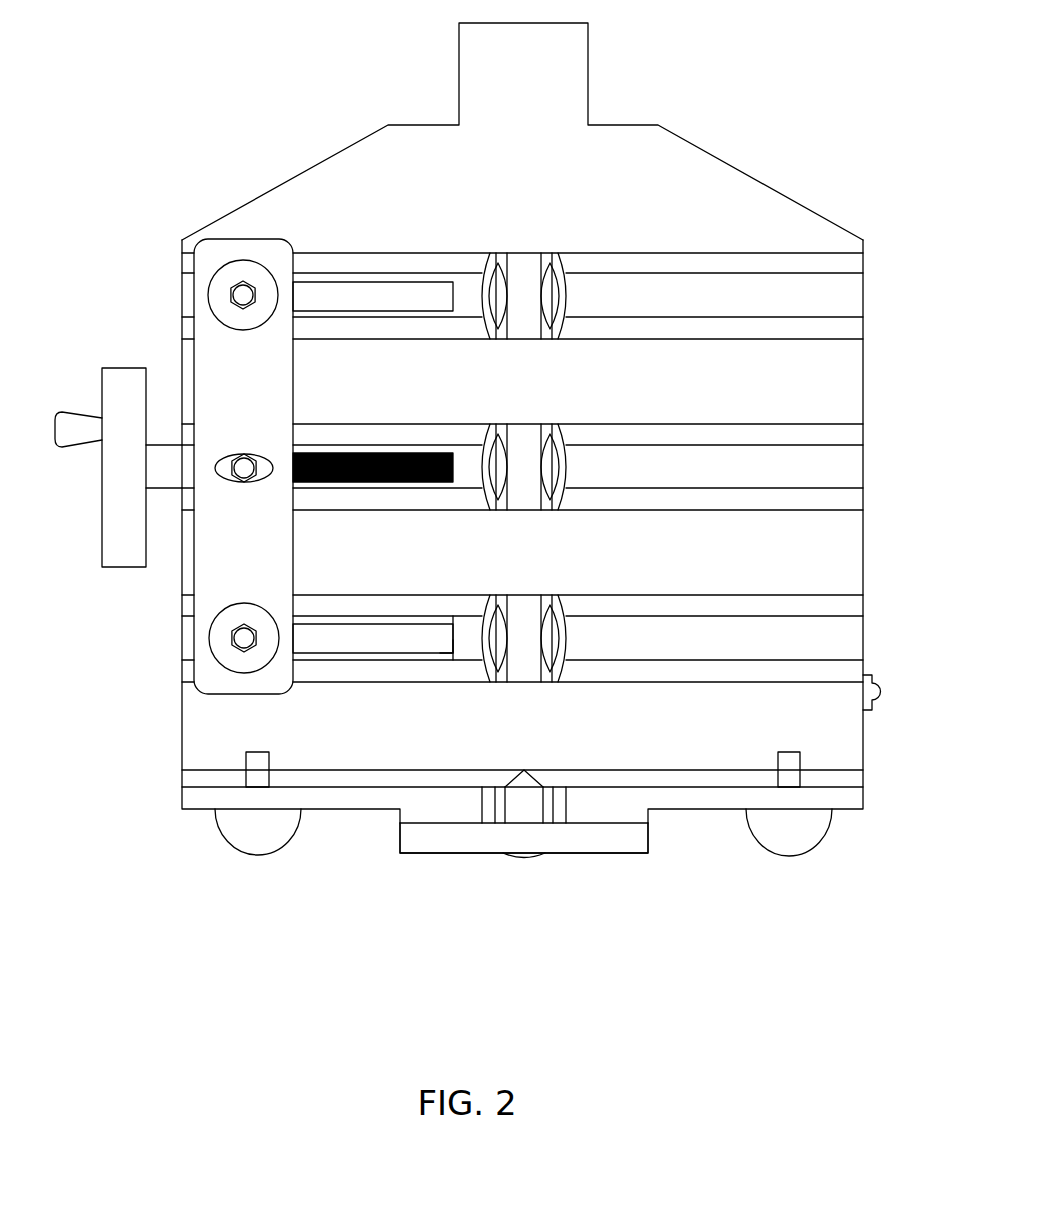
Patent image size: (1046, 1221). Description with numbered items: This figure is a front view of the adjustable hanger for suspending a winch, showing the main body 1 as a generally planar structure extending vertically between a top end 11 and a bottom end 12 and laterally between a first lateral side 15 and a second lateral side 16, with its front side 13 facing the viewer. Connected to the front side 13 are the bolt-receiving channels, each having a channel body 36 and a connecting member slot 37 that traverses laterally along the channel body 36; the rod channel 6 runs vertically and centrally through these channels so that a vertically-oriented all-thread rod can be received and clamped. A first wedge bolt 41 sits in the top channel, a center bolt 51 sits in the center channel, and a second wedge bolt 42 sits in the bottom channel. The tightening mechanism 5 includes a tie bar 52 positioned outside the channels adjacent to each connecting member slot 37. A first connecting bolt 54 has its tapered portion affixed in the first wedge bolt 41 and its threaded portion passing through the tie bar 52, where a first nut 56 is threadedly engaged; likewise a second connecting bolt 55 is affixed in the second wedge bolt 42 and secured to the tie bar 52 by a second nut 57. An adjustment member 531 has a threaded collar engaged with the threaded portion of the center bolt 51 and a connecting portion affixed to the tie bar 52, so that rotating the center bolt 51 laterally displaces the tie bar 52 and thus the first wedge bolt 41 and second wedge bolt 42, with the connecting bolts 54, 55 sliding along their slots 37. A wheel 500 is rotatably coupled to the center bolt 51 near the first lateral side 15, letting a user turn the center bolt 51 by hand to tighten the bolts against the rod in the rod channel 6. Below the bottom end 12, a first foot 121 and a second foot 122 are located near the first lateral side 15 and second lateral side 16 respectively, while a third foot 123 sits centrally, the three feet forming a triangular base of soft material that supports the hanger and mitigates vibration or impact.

The main body 1 is at (288, 178).
The top end 11 is at (633, 98).
The bottom end 12 is at (512, 801).
The front side 13 is at (581, 564).
The first lateral side 15 is at (158, 751).
The second lateral side 16 is at (875, 752).
The first foot 121 is at (242, 845).
The second foot 122 is at (783, 843).
The third foot 123 is at (524, 856).
The tightening mechanism 5 is at (169, 466).
The wheel 500 is at (120, 375).
The tie bar 52 is at (245, 408).
The adjustment member 531 is at (245, 480).
The first connecting bolt 54 is at (250, 290).
The second connecting bolt 55 is at (248, 636).
The first nut 56 is at (236, 318).
The second nut 57 is at (242, 625).
The rod channel 6 is at (527, 245).
The channel body 36 is at (465, 628).
The connecting member slot 37 is at (458, 651).
The first wedge bolt 41 is at (362, 296).
The second wedge bolt 42 is at (364, 637).
The center bolt 51 is at (359, 450).